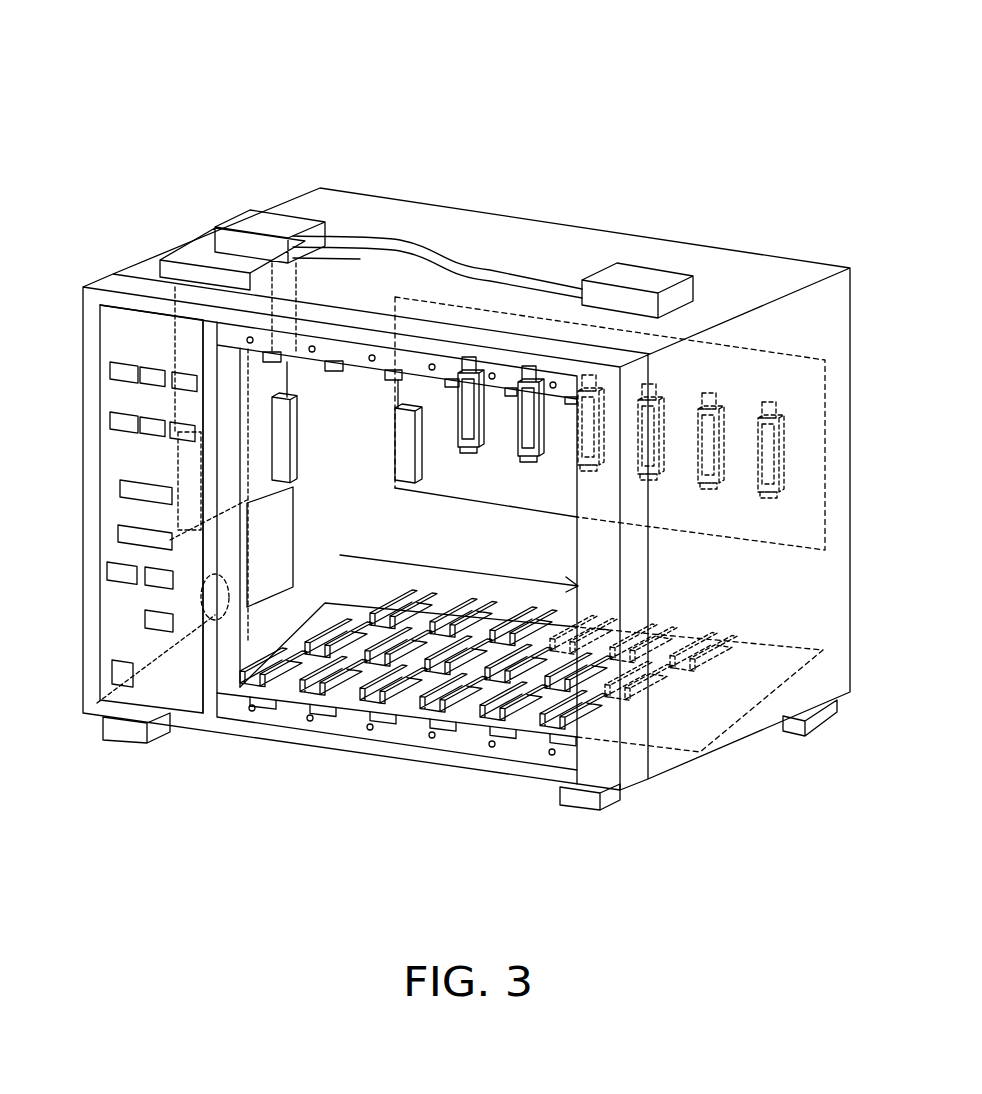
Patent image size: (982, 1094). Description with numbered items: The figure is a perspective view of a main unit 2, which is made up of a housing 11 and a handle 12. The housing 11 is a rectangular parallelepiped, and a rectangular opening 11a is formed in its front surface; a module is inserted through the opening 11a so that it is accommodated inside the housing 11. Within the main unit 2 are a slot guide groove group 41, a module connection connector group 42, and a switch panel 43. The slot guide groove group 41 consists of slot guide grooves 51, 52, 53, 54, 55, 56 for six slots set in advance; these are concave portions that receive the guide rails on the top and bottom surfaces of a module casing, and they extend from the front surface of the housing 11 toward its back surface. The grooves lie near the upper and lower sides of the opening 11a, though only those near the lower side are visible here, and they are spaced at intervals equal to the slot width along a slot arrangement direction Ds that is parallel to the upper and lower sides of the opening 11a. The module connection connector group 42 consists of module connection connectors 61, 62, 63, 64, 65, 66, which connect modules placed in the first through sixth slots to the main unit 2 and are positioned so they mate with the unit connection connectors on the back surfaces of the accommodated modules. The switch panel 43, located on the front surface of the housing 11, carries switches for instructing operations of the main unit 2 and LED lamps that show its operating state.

The main unit 2 is at (470, 466).
The housing 11 is at (330, 208).
The rectangular opening 11a is at (583, 590).
The handle 12 is at (421, 245).
The slot guide groove group 41 is at (213, 880).
The module connection connector group 42 is at (495, 140).
The switch panel 43 is at (160, 683).
The slot guide groove 51 is at (250, 702).
The slot guide groove 52 is at (308, 708).
The slot guide groove 53 is at (368, 712).
The slot guide groove 54 is at (430, 712).
The slot guide groove 55 is at (490, 718).
The slot guide groove 56 is at (552, 722).
The module connection connector 61 is at (490, 397).
The module connection connector 62 is at (550, 406).
The module connection connector 63 is at (610, 415).
The module connection connector 64 is at (670, 424).
The module connection connector 65 is at (730, 433).
The module connection connector 66 is at (790, 442).
The slot arrangement direction Ds is at (458, 569).